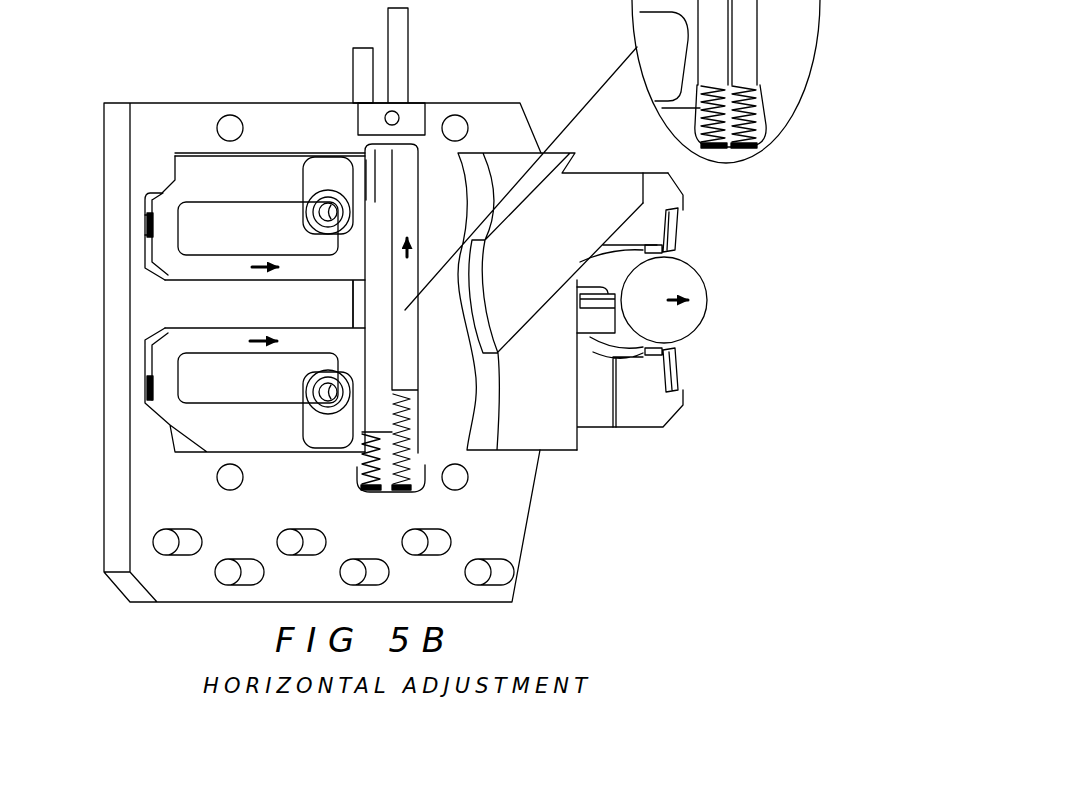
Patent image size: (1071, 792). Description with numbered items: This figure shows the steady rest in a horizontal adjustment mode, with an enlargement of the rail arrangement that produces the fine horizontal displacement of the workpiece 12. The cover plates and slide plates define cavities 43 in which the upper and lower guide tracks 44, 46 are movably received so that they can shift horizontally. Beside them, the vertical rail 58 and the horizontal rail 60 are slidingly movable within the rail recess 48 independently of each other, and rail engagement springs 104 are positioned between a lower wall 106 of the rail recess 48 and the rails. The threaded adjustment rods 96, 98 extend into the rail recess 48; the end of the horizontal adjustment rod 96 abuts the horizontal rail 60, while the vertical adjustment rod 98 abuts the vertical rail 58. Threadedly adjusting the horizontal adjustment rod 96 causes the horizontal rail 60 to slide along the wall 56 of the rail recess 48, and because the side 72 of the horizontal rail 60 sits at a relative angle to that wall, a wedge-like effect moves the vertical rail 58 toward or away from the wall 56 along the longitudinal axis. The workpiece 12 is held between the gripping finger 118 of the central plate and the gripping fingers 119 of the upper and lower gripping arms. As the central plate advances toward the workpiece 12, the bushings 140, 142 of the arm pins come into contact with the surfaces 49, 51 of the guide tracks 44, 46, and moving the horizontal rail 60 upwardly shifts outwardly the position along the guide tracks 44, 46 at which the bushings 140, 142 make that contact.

The workpiece 12 is at (679, 280).
The cavities 43 is at (175, 152).
The upper guide track 44 is at (157, 234).
The lower guide track 46 is at (161, 352).
The rail recess 48 is at (413, 477).
The surface 49 is at (336, 183).
The surface 51 is at (336, 430).
The wall 56 is at (415, 286).
The vertical rail 58 is at (373, 193).
The horizontal rail 60 is at (417, 210).
The side of horizontal rail 72 is at (422, 319).
The horizontal adjustment rod 96 is at (411, 82).
The vertical adjustment rod 98 is at (380, 46).
The rail engagement springs 104 is at (411, 446).
The lower wall of rail recess 106 is at (419, 494).
The gripping finger 118 is at (624, 309).
The gripping fingers 119 is at (684, 215).
The bushing 140 is at (302, 212).
The bushing 142 is at (302, 387).